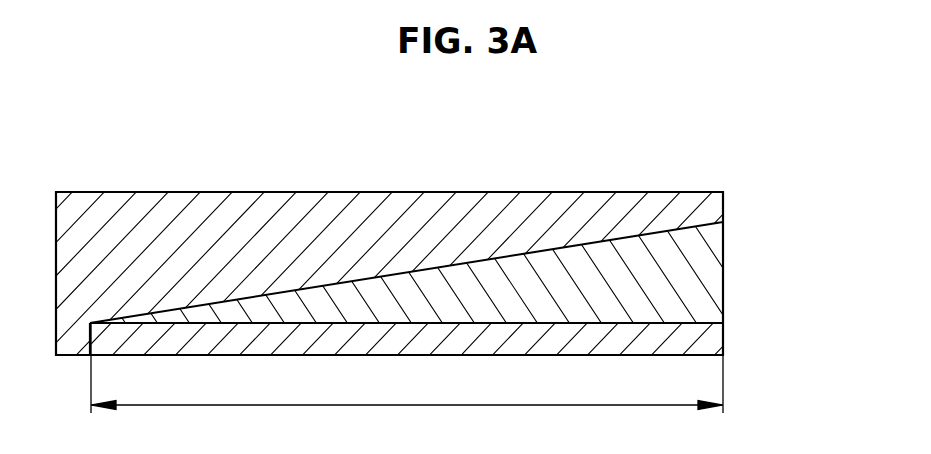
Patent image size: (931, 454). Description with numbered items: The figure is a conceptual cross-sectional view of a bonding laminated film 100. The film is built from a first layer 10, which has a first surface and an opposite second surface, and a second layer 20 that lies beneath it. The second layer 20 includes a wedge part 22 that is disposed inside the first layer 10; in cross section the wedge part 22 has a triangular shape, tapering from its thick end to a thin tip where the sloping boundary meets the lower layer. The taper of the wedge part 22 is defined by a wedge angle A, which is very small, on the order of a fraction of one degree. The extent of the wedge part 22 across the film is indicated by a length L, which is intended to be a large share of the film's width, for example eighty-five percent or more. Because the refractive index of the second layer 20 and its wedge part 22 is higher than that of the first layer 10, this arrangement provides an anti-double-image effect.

The bonding laminated film 100 is at (153, 160).
The first layer 10 is at (676, 211).
The wedge part 22 is at (598, 250).
The second layer 20 is at (700, 282).
The wedge angle A is at (182, 312).
The length of the wedge part L is at (407, 368).